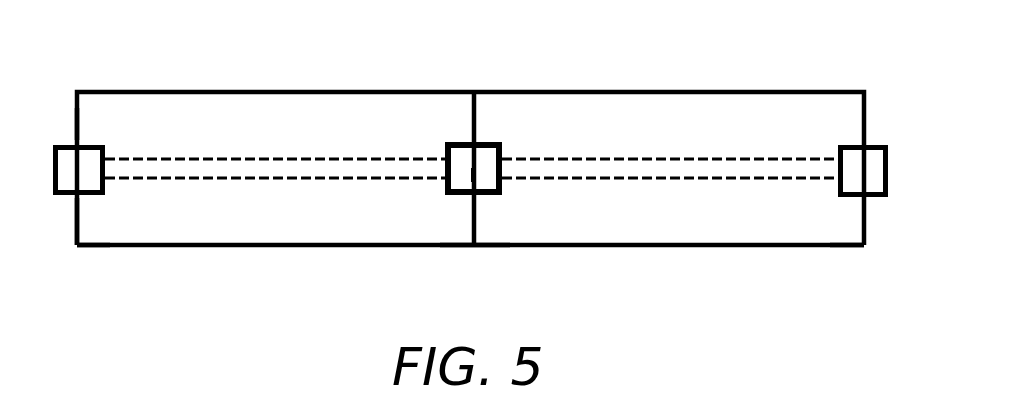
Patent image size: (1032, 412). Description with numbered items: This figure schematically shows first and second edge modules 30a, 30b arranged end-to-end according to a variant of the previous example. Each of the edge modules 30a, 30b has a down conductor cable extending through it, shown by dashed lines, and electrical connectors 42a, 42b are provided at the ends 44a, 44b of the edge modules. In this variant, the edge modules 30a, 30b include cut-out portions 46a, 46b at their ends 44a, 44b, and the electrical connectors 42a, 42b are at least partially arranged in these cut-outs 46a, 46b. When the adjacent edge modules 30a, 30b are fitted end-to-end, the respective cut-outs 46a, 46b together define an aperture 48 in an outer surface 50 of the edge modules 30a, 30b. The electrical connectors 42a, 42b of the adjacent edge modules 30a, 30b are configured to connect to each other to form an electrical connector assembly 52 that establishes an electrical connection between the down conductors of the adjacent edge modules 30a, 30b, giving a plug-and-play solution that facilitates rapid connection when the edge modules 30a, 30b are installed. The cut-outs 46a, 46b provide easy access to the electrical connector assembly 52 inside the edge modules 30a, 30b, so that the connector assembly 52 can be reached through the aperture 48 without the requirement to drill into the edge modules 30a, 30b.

The first edge module 30a is at (237, 74).
The second edge module 30b is at (701, 82).
The first electrical connector 42a is at (453, 197).
The second electrical connector 42b is at (72, 182).
The first end of edge module 44a is at (468, 257).
The second end of edge module 44b is at (85, 257).
The first cut-out portion 46a is at (441, 136).
The second cut-out portion 46b is at (109, 143).
The aperture 48 is at (481, 136).
The outer surface 50 is at (231, 233).
The electrical connector assembly 52 is at (458, 164).